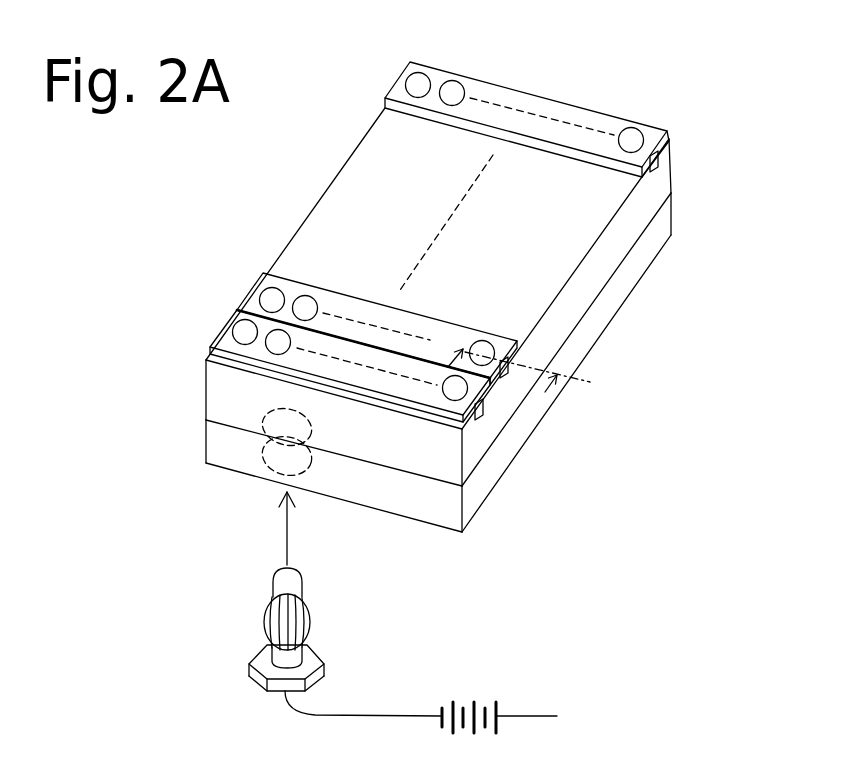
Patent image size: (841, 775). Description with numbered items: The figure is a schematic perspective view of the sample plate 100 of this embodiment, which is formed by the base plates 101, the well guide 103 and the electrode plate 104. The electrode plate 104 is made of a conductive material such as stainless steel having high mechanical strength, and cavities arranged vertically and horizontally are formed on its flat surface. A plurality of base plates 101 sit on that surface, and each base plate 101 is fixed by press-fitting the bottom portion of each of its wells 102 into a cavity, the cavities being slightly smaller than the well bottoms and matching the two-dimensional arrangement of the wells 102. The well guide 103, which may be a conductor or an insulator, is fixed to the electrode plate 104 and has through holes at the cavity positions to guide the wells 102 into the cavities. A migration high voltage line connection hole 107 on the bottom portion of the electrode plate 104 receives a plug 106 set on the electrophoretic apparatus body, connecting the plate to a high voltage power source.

The sample plate 100 is at (554, 40).
The base plate 101 is at (653, 128).
The well 102 is at (631, 127).
The well guide 103 is at (567, 317).
The electrode plate 104 is at (500, 467).
The plug 106 is at (310, 611).
The migration high voltage line connection hole 107 is at (250, 451).